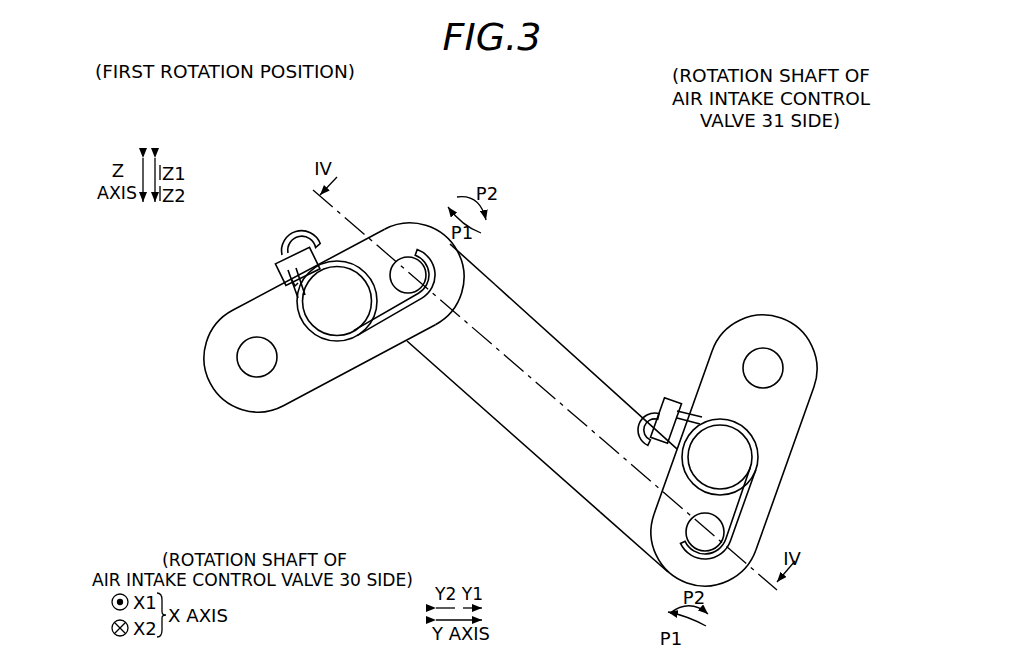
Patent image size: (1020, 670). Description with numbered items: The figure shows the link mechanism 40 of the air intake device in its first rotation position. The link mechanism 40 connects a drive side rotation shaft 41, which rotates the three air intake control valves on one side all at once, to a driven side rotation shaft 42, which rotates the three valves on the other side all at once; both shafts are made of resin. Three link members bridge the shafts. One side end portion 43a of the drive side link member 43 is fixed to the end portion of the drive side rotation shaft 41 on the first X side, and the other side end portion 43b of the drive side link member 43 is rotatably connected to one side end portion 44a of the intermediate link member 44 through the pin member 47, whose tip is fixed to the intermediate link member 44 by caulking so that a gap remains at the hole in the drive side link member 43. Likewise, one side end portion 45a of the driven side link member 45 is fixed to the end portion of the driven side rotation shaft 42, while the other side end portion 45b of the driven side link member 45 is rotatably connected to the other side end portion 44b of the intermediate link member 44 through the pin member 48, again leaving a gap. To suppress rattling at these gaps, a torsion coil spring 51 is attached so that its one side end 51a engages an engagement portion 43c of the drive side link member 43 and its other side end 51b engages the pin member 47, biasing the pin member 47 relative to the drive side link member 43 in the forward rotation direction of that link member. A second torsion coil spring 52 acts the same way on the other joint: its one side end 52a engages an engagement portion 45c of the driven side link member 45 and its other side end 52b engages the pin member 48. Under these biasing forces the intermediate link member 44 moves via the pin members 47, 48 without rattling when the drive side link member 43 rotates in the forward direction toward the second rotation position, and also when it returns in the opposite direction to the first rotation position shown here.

The link mechanism 40 is at (601, 146).
The drive side rotation shaft 41 is at (209, 442).
The driven side rotation shaft 42 is at (791, 260).
The drive side link member 43 is at (341, 325).
The one side end portion of the drive side link member 43a is at (220, 375).
The other side end portion of the drive side link member 43b is at (407, 232).
The engagement portion of the drive side link member 43c is at (270, 260).
The intermediate link member 44 is at (542, 401).
The one side end portion of the intermediate link member 44a is at (475, 288).
The other side end portion of the intermediate link member 44b is at (642, 528).
The driven side link member 45 is at (720, 392).
The one side end portion of the driven side link member 45a is at (780, 330).
The other side end portion of the driven side link member 45b is at (680, 567).
The engagement portion of the driven side link member 45c is at (677, 400).
The pin member 47 is at (408, 258).
The pin member 48 is at (707, 542).
The torsion coil spring 51 is at (392, 329).
The one side end of the torsion coil spring 51a is at (301, 231).
The other side end of the torsion coil spring 51b is at (437, 273).
The torsion coil spring 52 is at (715, 435).
The one side end of the torsion coil spring 52a is at (630, 395).
The other side end of the torsion coil spring 52b is at (685, 547).